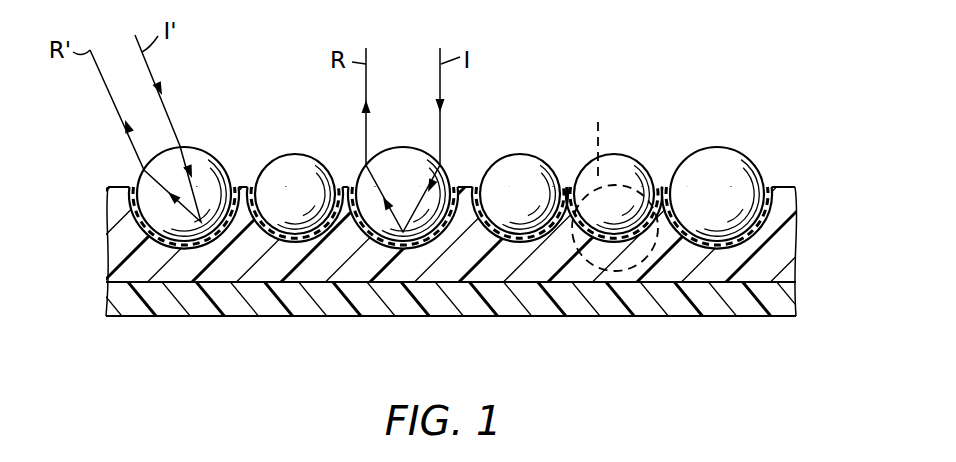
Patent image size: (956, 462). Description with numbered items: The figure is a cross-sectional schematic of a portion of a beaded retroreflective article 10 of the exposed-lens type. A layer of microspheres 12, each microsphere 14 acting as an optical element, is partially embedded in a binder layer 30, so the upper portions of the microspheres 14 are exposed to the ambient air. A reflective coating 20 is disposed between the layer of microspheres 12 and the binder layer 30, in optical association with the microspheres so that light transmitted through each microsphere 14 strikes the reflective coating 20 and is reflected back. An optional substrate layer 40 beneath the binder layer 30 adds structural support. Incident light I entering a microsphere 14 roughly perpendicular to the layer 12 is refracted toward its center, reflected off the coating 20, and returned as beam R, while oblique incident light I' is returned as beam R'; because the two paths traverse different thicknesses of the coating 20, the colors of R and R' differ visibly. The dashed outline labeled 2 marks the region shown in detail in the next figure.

The beaded retroreflective article 10 is at (712, 90).
The layer of microspheres 12 is at (112, 150).
The microsphere 14 is at (270, 177).
The reflective coating 20 is at (782, 197).
The binder layer 30 is at (122, 243).
The substrate layer 40 is at (212, 310).
The detail region shown in FIG. 2 is at (615, 173).